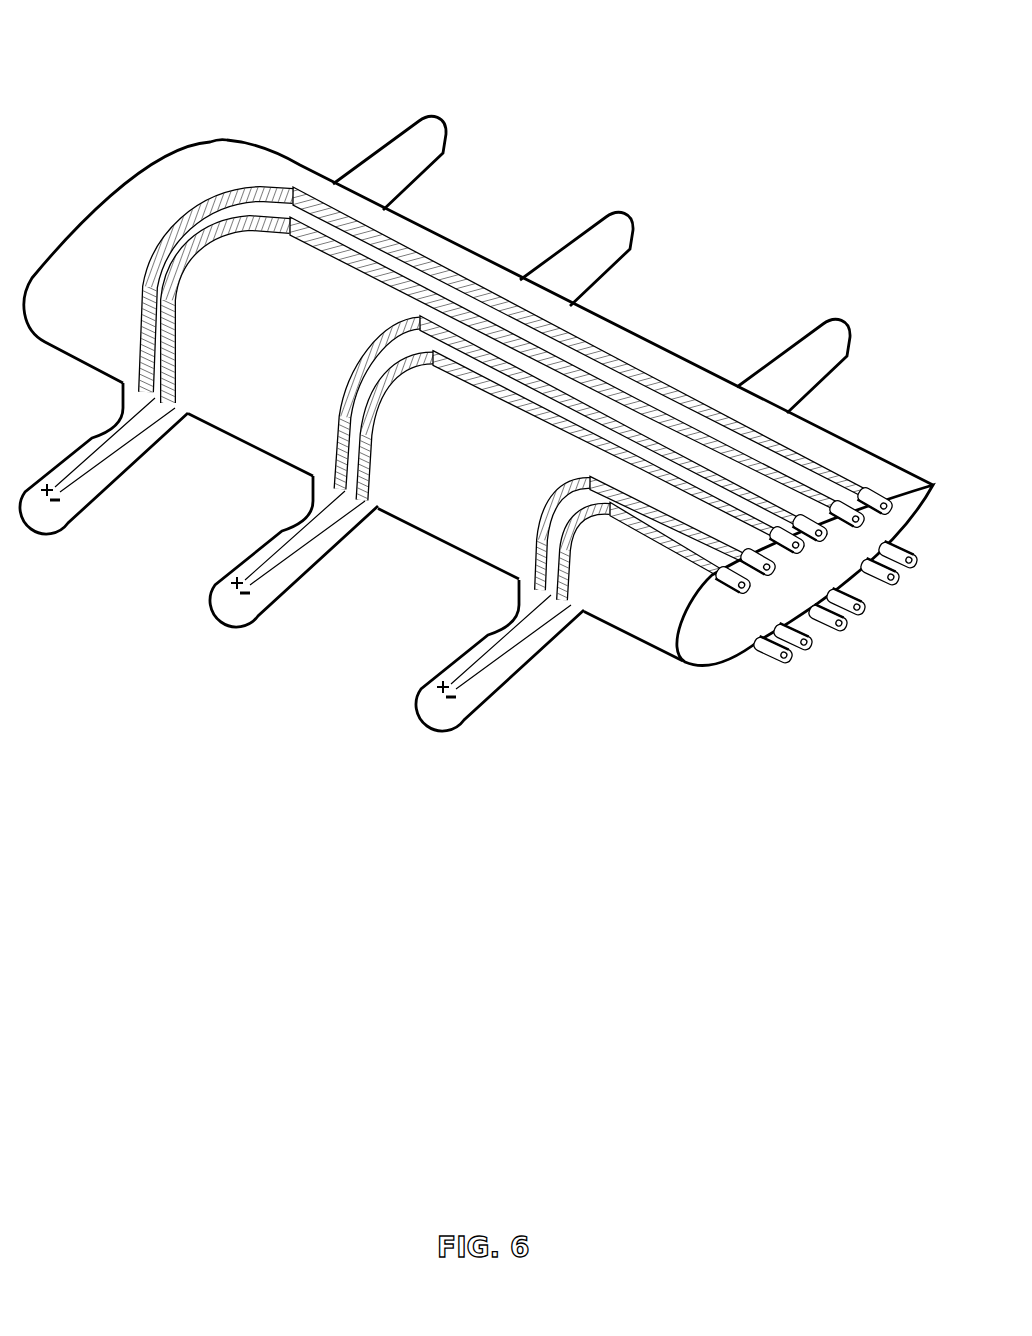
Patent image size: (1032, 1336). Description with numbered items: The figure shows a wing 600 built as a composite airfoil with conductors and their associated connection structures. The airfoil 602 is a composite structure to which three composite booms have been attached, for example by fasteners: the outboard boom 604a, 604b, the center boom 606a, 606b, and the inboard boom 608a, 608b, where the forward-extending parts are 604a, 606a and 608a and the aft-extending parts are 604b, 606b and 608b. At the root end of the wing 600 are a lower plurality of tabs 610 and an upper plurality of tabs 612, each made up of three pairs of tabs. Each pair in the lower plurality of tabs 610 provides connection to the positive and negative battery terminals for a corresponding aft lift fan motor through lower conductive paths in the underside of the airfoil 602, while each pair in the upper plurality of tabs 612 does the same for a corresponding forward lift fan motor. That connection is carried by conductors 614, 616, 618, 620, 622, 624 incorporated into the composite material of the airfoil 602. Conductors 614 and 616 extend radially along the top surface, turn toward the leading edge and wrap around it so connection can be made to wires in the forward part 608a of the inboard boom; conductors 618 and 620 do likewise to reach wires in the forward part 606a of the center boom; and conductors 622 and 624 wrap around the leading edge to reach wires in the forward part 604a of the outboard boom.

The wing 600 is at (152, 55).
The airfoil 602 is at (117, 188).
The forward part of the outboard boom 604a is at (87, 440).
The aft part of the outboard boom 604b is at (393, 135).
The forward part of the center boom 606a is at (270, 541).
The aft part of the center boom 606b is at (577, 237).
The forward part of the inboard boom 608a is at (475, 645).
The aft part of the inboard boom 608b is at (790, 343).
The lower plurality of tabs 610 is at (767, 665).
The upper plurality of tabs 612 is at (736, 596).
The conductor 614 is at (567, 565).
The conductor 616 is at (535, 535).
The conductor 618 is at (380, 420).
The conductor 620 is at (338, 410).
The conductor 622 is at (197, 282).
The conductor 624 is at (137, 313).